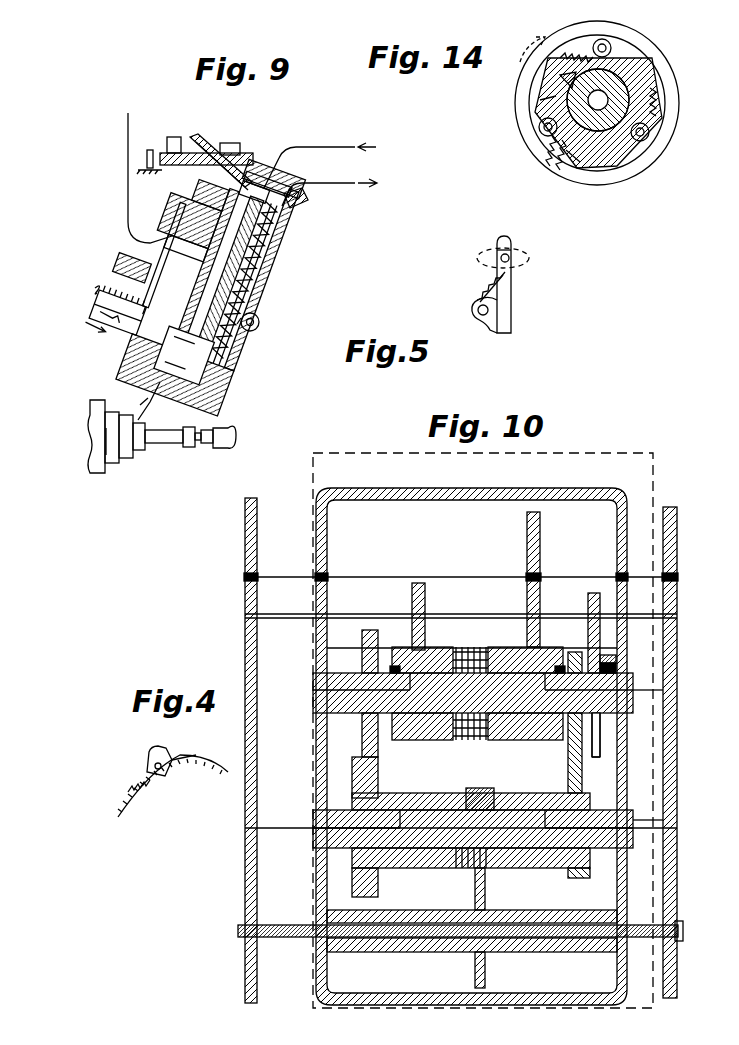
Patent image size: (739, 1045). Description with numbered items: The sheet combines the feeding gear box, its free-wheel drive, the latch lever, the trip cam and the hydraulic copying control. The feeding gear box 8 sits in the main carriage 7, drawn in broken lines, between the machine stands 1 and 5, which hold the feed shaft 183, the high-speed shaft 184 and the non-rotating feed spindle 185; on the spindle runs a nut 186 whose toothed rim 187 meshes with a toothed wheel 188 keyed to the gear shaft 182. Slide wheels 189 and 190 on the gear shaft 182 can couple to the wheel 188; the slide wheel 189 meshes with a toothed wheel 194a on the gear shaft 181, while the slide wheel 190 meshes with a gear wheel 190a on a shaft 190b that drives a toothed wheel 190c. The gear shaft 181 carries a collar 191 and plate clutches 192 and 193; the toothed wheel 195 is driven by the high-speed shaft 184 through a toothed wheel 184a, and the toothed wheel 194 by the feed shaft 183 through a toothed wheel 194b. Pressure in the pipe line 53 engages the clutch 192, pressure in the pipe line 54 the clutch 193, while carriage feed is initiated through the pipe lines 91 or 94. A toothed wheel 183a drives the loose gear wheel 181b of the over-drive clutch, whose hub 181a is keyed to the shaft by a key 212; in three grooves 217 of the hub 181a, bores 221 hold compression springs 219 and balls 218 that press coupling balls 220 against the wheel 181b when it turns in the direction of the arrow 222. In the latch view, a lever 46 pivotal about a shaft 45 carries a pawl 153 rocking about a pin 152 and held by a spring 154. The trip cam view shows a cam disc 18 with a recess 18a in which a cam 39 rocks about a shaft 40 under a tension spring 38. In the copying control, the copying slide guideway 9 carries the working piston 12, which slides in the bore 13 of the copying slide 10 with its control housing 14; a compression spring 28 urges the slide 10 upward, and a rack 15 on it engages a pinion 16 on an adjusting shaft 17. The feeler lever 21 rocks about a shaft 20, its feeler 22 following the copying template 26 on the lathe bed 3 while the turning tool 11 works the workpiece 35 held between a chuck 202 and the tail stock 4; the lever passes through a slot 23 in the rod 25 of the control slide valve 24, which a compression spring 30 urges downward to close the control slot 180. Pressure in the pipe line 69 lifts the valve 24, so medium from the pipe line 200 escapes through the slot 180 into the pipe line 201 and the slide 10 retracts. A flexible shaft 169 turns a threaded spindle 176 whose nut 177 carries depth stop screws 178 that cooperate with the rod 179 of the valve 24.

In FIG. 9, the pipe line 69 is at (128, 125).
In FIG. 9, the lathe bed 3 is at (140, 168).
In FIG. 9, the copying template 26 is at (172, 136).
In FIG. 9, the feeler 22 is at (193, 137).
In FIG. 9, the feeler lever 21 is at (215, 150).
In FIG. 9, the slot 23 is at (237, 146).
In FIG. 9, the shaft 20 is at (281, 157).
In FIG. 9, the pipe line 200 is at (326, 147).
In FIG. 9, the pipe line 201 is at (334, 184).
In FIG. 9, the control housing 14 is at (203, 275).
In FIG. 9, the compression spring 30 is at (254, 192).
In FIG. 9, the rod 25 is at (267, 184).
In FIG. 9, the control slot 180 is at (211, 195).
In FIG. 9, the control slide valve 24 is at (187, 227).
In FIG. 9, the copying slide guideway 9 is at (292, 210).
In FIG. 9, the rod 179 is at (132, 268).
In FIG. 9, the depth stop screws 178 is at (163, 258).
In FIG. 9, the copying slide 10 is at (272, 284).
In FIG. 9, the flexible shaft 169 is at (95, 289).
In FIG. 9, the rack 15 is at (243, 284).
In FIG. 9, the nut 177 is at (118, 309).
In FIG. 9, the adjusting shaft 17 is at (254, 314).
In FIG. 9, the threaded spindle 176 is at (95, 327).
In FIG. 9, the pinion 16 is at (256, 330).
In FIG. 9, the compression spring 28 is at (226, 283).
In FIG. 9, the working piston 12 is at (184, 355).
In FIG. 9, the bore 13 is at (175, 375).
In FIG. 9, the turning tool 11 is at (138, 408).
In FIG. 9, the workpiece 35 is at (174, 446).
In FIG. 9, the tail stock 4 is at (242, 449).
In FIG. 9, the chuck 202 is at (112, 465).
In FIG. 14, the arrow 222 is at (532, 36).
In FIG. 14, the loose gear wheel 181b is at (652, 50).
In FIG. 10, the loose gear wheel 181b is at (604, 656).
In FIG. 14, the key 212 is at (566, 80).
In FIG. 10, the key 212 is at (612, 678).
In FIG. 14, the hub 181a is at (548, 98).
In FIG. 10, the hub 181a is at (606, 665).
In FIG. 14, the gear shaft 181 is at (542, 108).
In FIG. 10, the gear shaft 181 is at (354, 755).
In FIG. 14, the coupling ball 220 is at (542, 130).
In FIG. 14, the ball 218 is at (552, 140).
In FIG. 14, the compression spring 219 is at (568, 150).
In FIG. 14, the bores 221 is at (578, 162).
In FIG. 14, the pipe line 54 is at (598, 110).
In FIG. 10, the pipe line 54 is at (640, 703).
In FIG. 14, the grooves 217 is at (630, 148).
In FIG. 5, the latch 153 is at (497, 246).
In FIG. 5, the pin 152 is at (510, 256).
In FIG. 5, the spring 154 is at (480, 292).
In FIG. 5, the lever 46 is at (512, 300).
In FIG. 5, the shaft 45 is at (476, 320).
In FIG. 10, the main carriage 7 is at (619, 453).
In FIG. 10, the feeding gear box 8 is at (388, 520).
In FIG. 10, the machine stand 5 is at (672, 512).
In FIG. 10, the machine stand 1 is at (262, 519).
In FIG. 10, the toothed wheel 184a is at (527, 529).
In FIG. 10, the high-speed shaft 184 is at (366, 568).
In FIG. 10, the toothed wheel 194b is at (412, 607).
In FIG. 10, the feed shaft 183 is at (474, 616).
In FIG. 10, the toothed wheel 183a is at (588, 612).
In FIG. 10, the toothed wheel 194a is at (362, 650).
In FIG. 10, the toothed wheel 194 is at (430, 647).
In FIG. 10, the collar 191 is at (464, 647).
In FIG. 10, the toothed wheel 195 is at (520, 647).
In FIG. 10, the toothed wheel 190c is at (573, 650).
In FIG. 10, the pipe line 53 is at (284, 690).
In FIG. 10, the plate clutch 192 is at (455, 740).
In FIG. 10, the plate clutch 193 is at (495, 740).
In FIG. 10, the slide wheel 189 is at (410, 793).
In FIG. 10, the toothed wheel 188 is at (470, 790).
In FIG. 10, the gear wheel 190a is at (568, 770).
In FIG. 10, the shaft 190b is at (598, 757).
In FIG. 10, the pipe line 91 is at (282, 828).
In FIG. 10, the pipe line 94 is at (644, 828).
In FIG. 10, the gear shaft 182 is at (313, 840).
In FIG. 10, the toothed rim 187 is at (475, 891).
In FIG. 10, the slide wheel 190 is at (578, 878).
In FIG. 10, the feed spindle 185 is at (295, 938).
In FIG. 10, the nut 186 is at (396, 952).
In FIG. 4, the shaft 40 is at (152, 760).
In FIG. 4, the cam 39 is at (164, 748).
In FIG. 4, the recess 18a is at (196, 758).
In FIG. 4, the tension spring 38 is at (127, 784).
In FIG. 4, the cam disc 18 is at (222, 772).